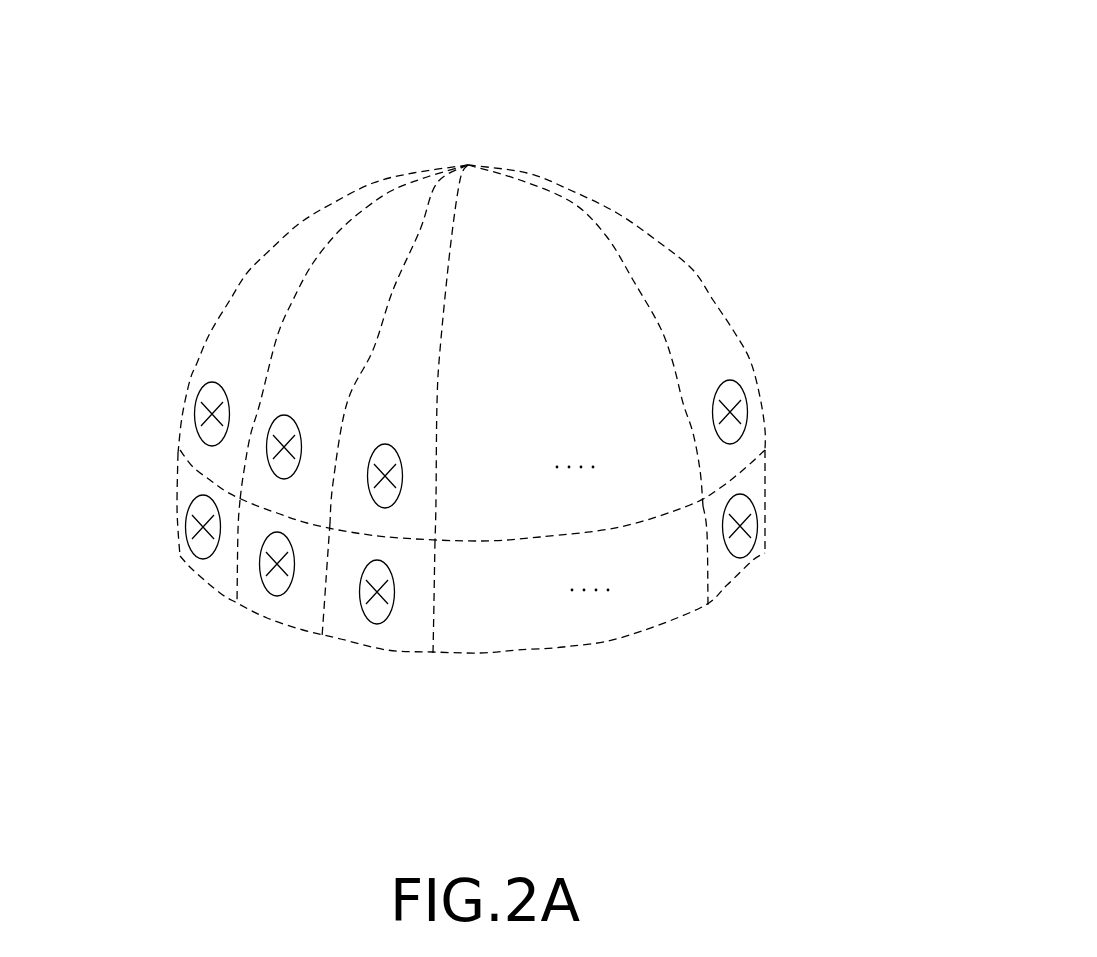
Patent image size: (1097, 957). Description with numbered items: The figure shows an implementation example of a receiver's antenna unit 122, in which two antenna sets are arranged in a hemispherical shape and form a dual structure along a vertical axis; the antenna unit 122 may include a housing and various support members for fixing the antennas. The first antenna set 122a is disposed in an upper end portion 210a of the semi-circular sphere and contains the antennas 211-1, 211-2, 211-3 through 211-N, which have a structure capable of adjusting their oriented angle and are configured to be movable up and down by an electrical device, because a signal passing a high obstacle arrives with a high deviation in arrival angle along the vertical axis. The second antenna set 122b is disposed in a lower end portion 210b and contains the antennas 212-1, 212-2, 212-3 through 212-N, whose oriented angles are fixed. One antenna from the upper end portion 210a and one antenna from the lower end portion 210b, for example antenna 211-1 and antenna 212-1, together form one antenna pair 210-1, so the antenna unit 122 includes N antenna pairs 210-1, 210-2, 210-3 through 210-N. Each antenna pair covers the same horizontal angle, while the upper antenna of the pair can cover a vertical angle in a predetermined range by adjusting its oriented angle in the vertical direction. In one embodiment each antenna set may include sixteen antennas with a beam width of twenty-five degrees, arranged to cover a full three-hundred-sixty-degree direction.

The antenna unit 122 is at (704, 68).
The first antenna set 122a is at (178, 359).
The second antenna set 122b is at (165, 499).
The antenna pair 210-1 is at (207, 582).
The antenna pair 210-2 is at (288, 625).
The antenna pair 210-3 is at (377, 647).
The antenna pair 210-N is at (727, 592).
The upper end portion 210a is at (803, 428).
The lower end portion 210b is at (803, 557).
The antenna 211-1 is at (195, 425).
The antenna 211-2 is at (284, 415).
The antenna 211-3 is at (403, 488).
The antenna 211-N is at (730, 382).
The antenna 212-1 is at (190, 556).
The antenna 212-2 is at (277, 594).
The antenna 212-3 is at (380, 623).
The antenna 212-N is at (740, 558).